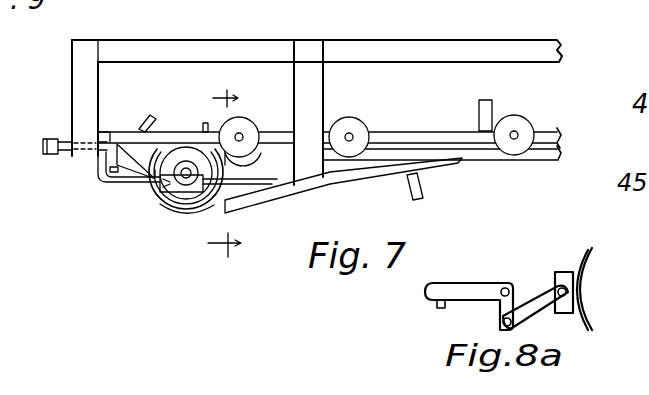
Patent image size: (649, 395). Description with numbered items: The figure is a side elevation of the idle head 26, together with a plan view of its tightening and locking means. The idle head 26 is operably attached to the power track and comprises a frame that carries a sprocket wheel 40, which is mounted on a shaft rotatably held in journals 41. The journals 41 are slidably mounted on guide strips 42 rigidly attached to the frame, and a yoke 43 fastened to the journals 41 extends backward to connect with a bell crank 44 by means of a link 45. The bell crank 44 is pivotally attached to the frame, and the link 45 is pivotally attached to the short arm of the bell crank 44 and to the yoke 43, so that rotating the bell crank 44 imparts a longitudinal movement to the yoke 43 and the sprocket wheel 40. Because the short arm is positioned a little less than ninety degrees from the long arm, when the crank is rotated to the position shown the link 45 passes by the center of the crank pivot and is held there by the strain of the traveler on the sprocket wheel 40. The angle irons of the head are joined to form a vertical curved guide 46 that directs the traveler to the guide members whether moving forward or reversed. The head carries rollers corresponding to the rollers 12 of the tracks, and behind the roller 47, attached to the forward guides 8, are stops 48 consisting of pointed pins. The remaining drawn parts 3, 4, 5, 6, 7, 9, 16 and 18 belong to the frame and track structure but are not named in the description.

In FIG. 7, the frame post 3 is at (240, 32).
In FIG. 7, the centre post 4 is at (318, 100).
In FIG. 7, the upright 5 is at (313, 40).
In FIG. 7, the top beam 6 is at (442, 47).
In FIG. 7, the lower rail 7 is at (561, 117).
In FIG. 7, the forward guides 8 is at (400, 131).
In FIG. 7, the inclined plate 9 is at (460, 152).
In FIG. 7, the rollers 12 is at (513, 121).
In FIG. 7, the bracket 16 is at (485, 100).
In FIG. 7, the hanger bracket 18 is at (418, 203).
In FIG. 7, the idle head 26 is at (273, 240).
In FIG. 7, the sprocket wheel 40 is at (158, 202).
In FIG. 7, the journals 41 is at (150, 183).
In FIG. 7, the guide strips 42 is at (104, 183).
In FIG. 7, the yoke 43 is at (127, 168).
In FIG. 8a, the yoke 43 is at (591, 262).
In FIG. 7, the bell crank 44 is at (61, 154).
In FIG. 8a, the bell crank 44 is at (482, 283).
In FIG. 7, the link 45 is at (59, 142).
In FIG. 8a, the link 45 is at (542, 292).
In FIG. 7, the vertical curved guide 46 is at (223, 207).
In FIG. 7, the roller 47 is at (244, 126).
In FIG. 7, the stops 48 is at (204, 130).